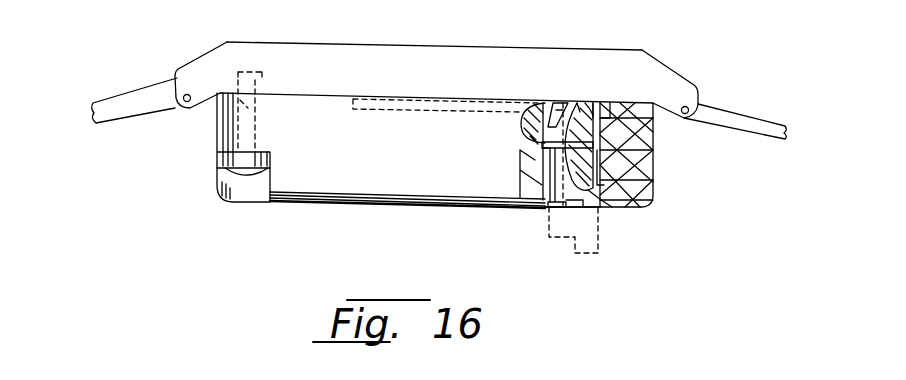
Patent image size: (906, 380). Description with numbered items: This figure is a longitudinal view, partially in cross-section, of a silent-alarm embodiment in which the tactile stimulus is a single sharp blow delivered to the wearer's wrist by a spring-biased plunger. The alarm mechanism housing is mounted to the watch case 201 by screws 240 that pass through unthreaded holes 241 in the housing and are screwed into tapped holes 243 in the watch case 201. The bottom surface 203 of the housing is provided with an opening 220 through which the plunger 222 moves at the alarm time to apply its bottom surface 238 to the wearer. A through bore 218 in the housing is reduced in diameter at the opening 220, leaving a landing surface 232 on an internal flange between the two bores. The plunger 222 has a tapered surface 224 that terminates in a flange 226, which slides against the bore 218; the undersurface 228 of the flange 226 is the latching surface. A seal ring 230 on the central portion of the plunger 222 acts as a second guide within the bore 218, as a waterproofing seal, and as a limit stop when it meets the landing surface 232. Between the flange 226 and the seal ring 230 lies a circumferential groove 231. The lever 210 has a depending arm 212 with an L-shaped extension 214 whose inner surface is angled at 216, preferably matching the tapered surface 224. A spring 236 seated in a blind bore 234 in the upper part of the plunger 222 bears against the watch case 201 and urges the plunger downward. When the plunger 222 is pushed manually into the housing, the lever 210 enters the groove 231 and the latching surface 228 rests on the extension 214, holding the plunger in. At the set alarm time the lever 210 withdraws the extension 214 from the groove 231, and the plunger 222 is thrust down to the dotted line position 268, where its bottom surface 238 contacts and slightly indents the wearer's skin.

The watch case 201 is at (233, 44).
The bottom surface 203 is at (372, 207).
The lever 210 is at (388, 99).
The depending arm 212 is at (521, 123).
The L-shaped extension 214 is at (540, 120).
The angled inner surface 216 is at (545, 160).
The through bore 218 is at (625, 207).
The opening 220 is at (553, 207).
The plunger 222 is at (543, 188).
The tapered surface 224 is at (548, 112).
The flange 226 is at (603, 133).
The undersurface of flange 228 is at (593, 142).
The seal ring 230 is at (620, 190).
The circumferential groove 231 is at (606, 160).
The landing surface 232 is at (620, 211).
The blind bore 234 is at (580, 108).
The spring 236 is at (582, 110).
The bottom surface of plunger 238 is at (573, 210).
The screws 240 is at (230, 173).
The unthreaded holes 241 is at (216, 130).
The tapped holes 243 is at (262, 72).
The dotted line position 268 is at (577, 253).